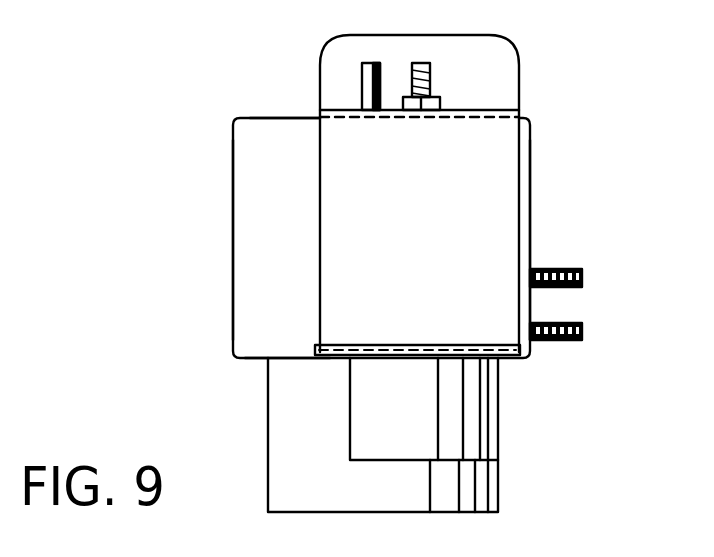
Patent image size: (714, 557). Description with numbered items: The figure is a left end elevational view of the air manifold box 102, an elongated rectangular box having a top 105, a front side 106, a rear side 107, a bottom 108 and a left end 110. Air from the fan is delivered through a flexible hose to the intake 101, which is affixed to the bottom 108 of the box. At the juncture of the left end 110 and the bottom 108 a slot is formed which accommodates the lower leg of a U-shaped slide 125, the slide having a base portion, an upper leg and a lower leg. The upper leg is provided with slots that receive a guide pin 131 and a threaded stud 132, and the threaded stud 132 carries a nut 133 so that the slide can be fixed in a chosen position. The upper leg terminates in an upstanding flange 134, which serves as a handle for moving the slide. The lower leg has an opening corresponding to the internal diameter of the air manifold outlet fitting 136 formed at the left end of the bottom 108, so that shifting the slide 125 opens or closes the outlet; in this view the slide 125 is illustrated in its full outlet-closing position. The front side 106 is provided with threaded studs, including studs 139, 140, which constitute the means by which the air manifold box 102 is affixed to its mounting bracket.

The intake 101 is at (283, 453).
The air manifold box 102 is at (243, 118).
The top 105 is at (296, 117).
The front side 106 is at (530, 178).
The rear side 107 is at (233, 166).
The bottom 108 is at (285, 362).
The left end 110 is at (292, 236).
The slide 125 is at (477, 177).
The guide pin 131 is at (362, 77).
The threaded stud 132 is at (418, 63).
The nut 133 is at (430, 99).
The upstanding flange 134 is at (487, 43).
The air manifold outlet fitting 136 is at (473, 427).
The stud 139 is at (553, 269).
The stud 140 is at (558, 342).